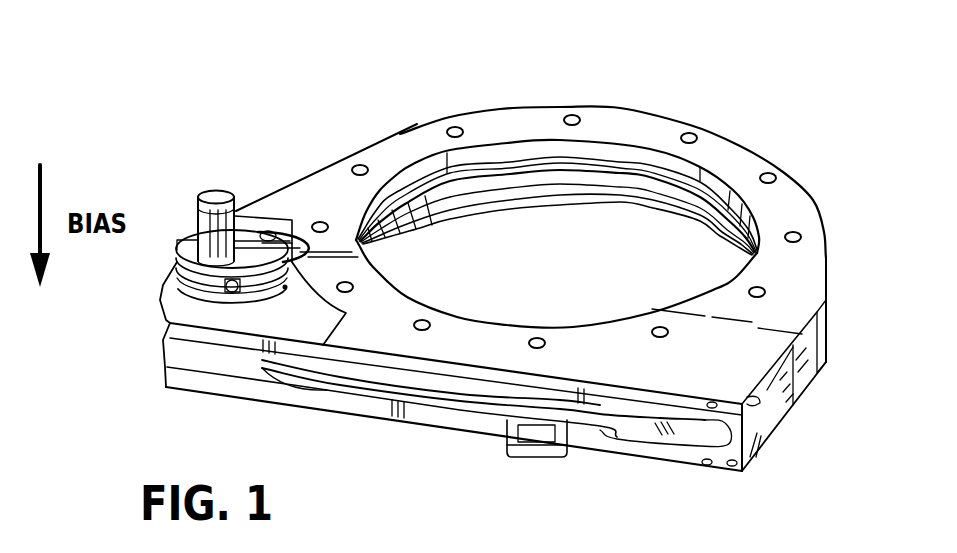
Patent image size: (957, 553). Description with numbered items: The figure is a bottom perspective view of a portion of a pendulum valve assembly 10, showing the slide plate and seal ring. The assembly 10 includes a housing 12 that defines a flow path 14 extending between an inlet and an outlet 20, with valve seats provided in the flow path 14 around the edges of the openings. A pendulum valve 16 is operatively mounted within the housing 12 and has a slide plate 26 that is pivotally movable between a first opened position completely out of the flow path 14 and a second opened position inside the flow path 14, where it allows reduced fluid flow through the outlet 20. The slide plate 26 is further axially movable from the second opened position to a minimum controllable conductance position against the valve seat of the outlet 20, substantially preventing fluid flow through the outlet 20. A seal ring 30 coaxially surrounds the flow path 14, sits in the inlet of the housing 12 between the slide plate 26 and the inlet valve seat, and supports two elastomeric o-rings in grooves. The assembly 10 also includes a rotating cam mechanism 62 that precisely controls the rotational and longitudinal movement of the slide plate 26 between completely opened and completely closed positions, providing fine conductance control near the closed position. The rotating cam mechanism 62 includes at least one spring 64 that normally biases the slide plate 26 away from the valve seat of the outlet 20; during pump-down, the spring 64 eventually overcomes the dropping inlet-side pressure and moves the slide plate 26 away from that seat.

The pendulum valve assembly 10 is at (829, 66).
The housing 12 is at (826, 207).
The flow path 14 is at (482, 140).
The pendulum valve 16 is at (421, 218).
The outlet 20 is at (647, 150).
The slide plate 26 is at (573, 280).
The seal ring 30 is at (556, 166).
The rotating cam mechanism 62 is at (258, 300).
The spring 64 is at (176, 291).